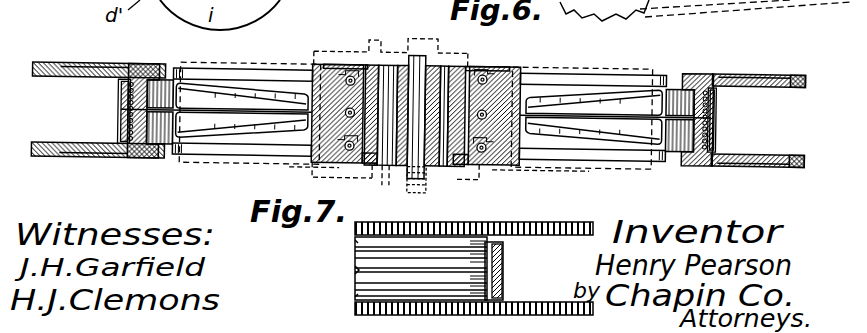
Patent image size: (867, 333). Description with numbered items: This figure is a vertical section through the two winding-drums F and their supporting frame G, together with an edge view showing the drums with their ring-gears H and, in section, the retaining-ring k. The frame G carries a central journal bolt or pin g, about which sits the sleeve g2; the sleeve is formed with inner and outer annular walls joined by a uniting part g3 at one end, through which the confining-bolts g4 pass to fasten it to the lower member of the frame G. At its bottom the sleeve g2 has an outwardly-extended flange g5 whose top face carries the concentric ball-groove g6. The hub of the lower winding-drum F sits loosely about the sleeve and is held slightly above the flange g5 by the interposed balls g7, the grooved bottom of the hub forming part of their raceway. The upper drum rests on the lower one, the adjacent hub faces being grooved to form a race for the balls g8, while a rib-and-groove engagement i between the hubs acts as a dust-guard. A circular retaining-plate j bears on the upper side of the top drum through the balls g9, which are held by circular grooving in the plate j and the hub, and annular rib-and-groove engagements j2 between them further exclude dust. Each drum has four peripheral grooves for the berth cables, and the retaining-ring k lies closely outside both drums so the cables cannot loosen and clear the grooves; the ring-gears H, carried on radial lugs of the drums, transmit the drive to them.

In FIG. 6, the ring-gear H is at (42, 63).
In FIG. 7, the ring-gear H is at (585, 221).
In FIG. 6, the winding-drum F is at (142, 72).
In FIG. 7, the winding-drum F is at (355, 250).
In FIG. 6, the balls d is at (121, 113).
In FIG. 6, the retaining-ring k is at (121, 126).
In FIG. 7, the retaining-ring k is at (505, 262).
In FIG. 6, the rib-and-groove engagement i is at (590, 106).
In FIG. 6, the retaining-plate j is at (478, 68).
In FIG. 6, the annular rib-and-groove engagement j2 is at (312, 68).
In FIG. 6, the frame G is at (323, 167).
In FIG. 6, the central journal bolt or pin g is at (420, 62).
In FIG. 6, the sleeve g2 is at (437, 68).
In FIG. 6, the uniting part g3 is at (478, 193).
In FIG. 6, the confining-bolt g4 is at (438, 178).
In FIG. 6, the flange g5 is at (487, 167).
In FIG. 6, the ball-groove g6 is at (352, 165).
In FIG. 6, the balls g7 is at (520, 167).
In FIG. 6, the balls g8 is at (558, 130).
In FIG. 6, the balls g9 is at (350, 78).